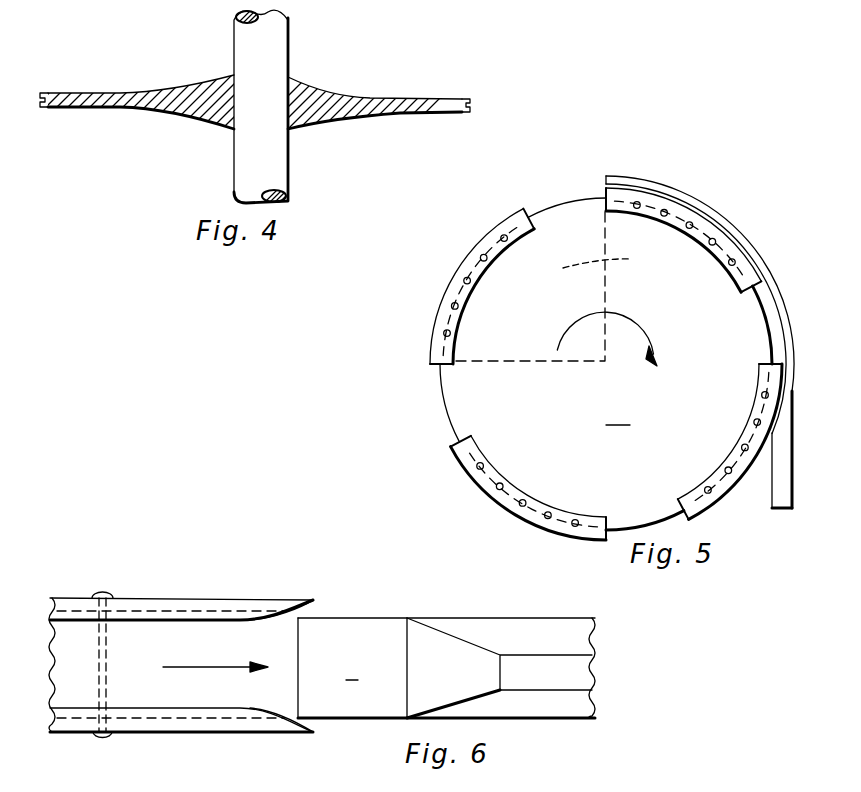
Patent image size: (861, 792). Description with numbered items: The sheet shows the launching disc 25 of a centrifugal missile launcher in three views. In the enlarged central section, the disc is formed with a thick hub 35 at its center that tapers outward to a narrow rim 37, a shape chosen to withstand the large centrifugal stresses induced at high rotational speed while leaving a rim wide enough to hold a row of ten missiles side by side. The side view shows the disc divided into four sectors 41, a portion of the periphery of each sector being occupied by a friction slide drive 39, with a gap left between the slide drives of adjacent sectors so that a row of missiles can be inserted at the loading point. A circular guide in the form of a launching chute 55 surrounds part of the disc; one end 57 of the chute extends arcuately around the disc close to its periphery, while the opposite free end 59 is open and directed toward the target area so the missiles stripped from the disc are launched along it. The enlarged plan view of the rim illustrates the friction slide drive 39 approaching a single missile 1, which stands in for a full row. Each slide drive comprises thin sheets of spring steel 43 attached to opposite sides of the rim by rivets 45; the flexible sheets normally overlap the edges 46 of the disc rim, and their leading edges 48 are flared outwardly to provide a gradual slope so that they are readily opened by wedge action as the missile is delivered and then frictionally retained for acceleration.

In FIG. 6, the nozzle assembly 1 is at (446, 668).
In FIG. 5, the launching disc 25 is at (606, 364).
In FIG. 4, the hub 35 is at (291, 80).
In FIG. 4, the rim 37 is at (465, 97).
In FIG. 5, the friction slide drive 39 is at (432, 352).
In FIG. 6, the friction slide drive 39 is at (178, 738).
In FIG. 5, the sector 41 is at (607, 261).
In FIG. 5, the sheet of spring steel 43 is at (488, 470).
In FIG. 6, the sheet of spring steel 43 is at (171, 611).
In FIG. 5, the rivet 45 is at (502, 485).
In FIG. 6, the rivet 45 is at (97, 738).
In FIG. 6, the edge of the disc rim 46 is at (172, 718).
In FIG. 5, the leading edge 48 is at (528, 210).
In FIG. 6, the leading edge 48 is at (303, 598).
In FIG. 5, the launching chute 55 is at (786, 430).
In FIG. 5, the end of the launching chute 57 is at (683, 195).
In FIG. 5, the free end of the launching chute 59 is at (792, 509).